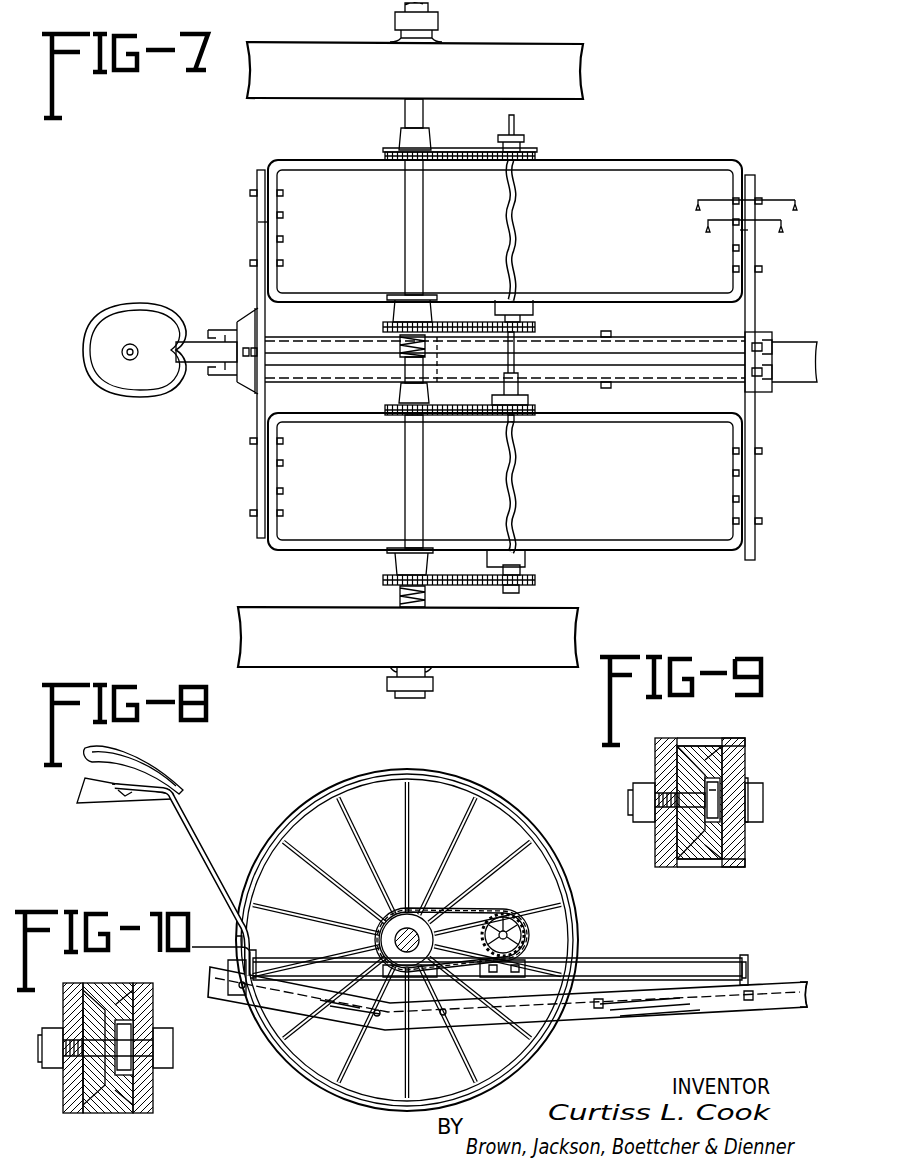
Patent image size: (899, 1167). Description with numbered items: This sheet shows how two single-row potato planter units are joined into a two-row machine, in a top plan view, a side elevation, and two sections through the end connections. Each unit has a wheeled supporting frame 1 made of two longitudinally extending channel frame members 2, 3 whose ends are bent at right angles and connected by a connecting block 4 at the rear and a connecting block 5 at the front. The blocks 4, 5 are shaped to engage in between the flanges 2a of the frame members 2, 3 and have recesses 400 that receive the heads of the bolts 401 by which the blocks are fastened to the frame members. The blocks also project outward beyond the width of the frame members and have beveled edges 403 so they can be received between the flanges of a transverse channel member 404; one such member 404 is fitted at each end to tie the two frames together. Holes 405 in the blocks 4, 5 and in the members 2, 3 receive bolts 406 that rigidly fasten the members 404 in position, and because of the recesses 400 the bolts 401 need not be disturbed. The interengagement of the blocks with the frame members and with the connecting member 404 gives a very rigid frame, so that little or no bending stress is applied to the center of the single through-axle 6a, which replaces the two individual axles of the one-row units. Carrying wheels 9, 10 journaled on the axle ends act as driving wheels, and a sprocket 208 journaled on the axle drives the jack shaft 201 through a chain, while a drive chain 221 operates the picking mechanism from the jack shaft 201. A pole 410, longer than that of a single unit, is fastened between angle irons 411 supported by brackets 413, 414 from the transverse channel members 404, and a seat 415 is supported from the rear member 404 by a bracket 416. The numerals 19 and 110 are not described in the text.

In FIG. 7, the wheeled supporting frame 1 is at (665, 157).
In FIG. 7, the channel frame member 2 is at (578, 302).
In FIG. 7, the channel frame member 3 is at (568, 175).
In FIG. 10, the channel frame member 3 is at (70, 1105).
In FIG. 7, the connecting block 4 is at (272, 226).
In FIG. 7, the connecting block 5 is at (745, 236).
In FIG. 9, the connecting block 5 is at (722, 760).
In FIG. 10, the connecting block 5 is at (78, 1080).
In FIG. 7, the through-axle 6a is at (405, 515).
In FIG. 7, the carrying wheel 9 is at (715, 235).
In FIG. 7, the carrying wheel 10 is at (715, 213).
In FIG. 7, the spacing 19 is at (778, 235).
In FIG. 7, the spacing 110 is at (795, 216).
In FIG. 7, the jack shaft 201 is at (516, 232).
In FIG. 7, the sprocket 208 is at (440, 322).
In FIG. 7, the drive chain 221 is at (455, 152).
In FIG. 9, the recess 400 is at (722, 785).
In FIG. 10, the recess 400 is at (126, 1100).
In FIG. 7, the bolt 401 is at (284, 214).
In FIG. 9, the bolt 401 is at (660, 828).
In FIG. 9, the beveled edge 403 is at (712, 742).
In FIG. 7, the transverse channel member 404 is at (756, 412).
In FIG. 9, the transverse channel member 404 is at (738, 844).
In FIG. 10, the transverse channel member 404 is at (143, 1100).
In FIG. 10, the hole 405 is at (100, 1040).
In FIG. 7, the bolt 406 is at (250, 193).
In FIG. 9, the bolt 406 is at (750, 808).
In FIG. 10, the bolt 406 is at (160, 1050).
In FIG. 7, the pole 410 is at (790, 354).
In FIG. 8, the pole 410 is at (788, 998).
In FIG. 7, the angle iron 411 is at (642, 352).
In FIG. 8, the angle iron 411 is at (355, 1018).
In FIG. 7, the bracket 413 is at (758, 332).
In FIG. 8, the bracket 413 is at (748, 964).
In FIG. 7, the bracket 414 is at (246, 385).
In FIG. 8, the bracket 414 is at (235, 995).
In FIG. 7, the seat 415 is at (152, 388).
In FIG. 8, the seat 415 is at (186, 782).
In FIG. 8, the bracket 416 is at (254, 946).
In FIG. 9, the flange 2a is at (665, 748).